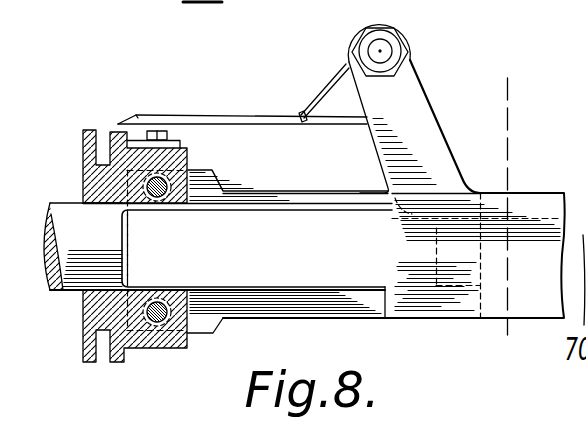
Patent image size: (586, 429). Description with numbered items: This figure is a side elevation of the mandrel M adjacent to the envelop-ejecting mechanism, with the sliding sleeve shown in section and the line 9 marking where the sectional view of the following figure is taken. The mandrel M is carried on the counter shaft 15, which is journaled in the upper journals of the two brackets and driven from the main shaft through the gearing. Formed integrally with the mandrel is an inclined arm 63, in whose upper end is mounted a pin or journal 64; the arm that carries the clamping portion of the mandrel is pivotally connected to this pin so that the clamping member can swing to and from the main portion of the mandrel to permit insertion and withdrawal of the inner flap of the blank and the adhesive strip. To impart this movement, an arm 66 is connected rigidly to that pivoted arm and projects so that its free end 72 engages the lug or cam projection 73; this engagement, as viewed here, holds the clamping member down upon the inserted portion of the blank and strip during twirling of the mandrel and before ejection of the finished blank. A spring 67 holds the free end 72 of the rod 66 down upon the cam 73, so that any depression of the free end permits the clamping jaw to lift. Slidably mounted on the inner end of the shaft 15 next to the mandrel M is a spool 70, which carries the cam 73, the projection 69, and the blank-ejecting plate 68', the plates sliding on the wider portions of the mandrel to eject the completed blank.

The counter shaft 15 is at (60, 203).
The inclined arm 63 is at (437, 138).
The pin or journal 64 is at (382, 50).
The arm 66 is at (222, 117).
The spring 67 is at (327, 82).
The blank-ejecting plate 68' is at (288, 169).
The projection 69 is at (147, 337).
The spool 70 is at (88, 130).
The free end 72 is at (130, 116).
The lug or cam projection 73 is at (130, 135).
The section line 9— 9 is at (505, 207).
The mandrel M is at (544, 196).